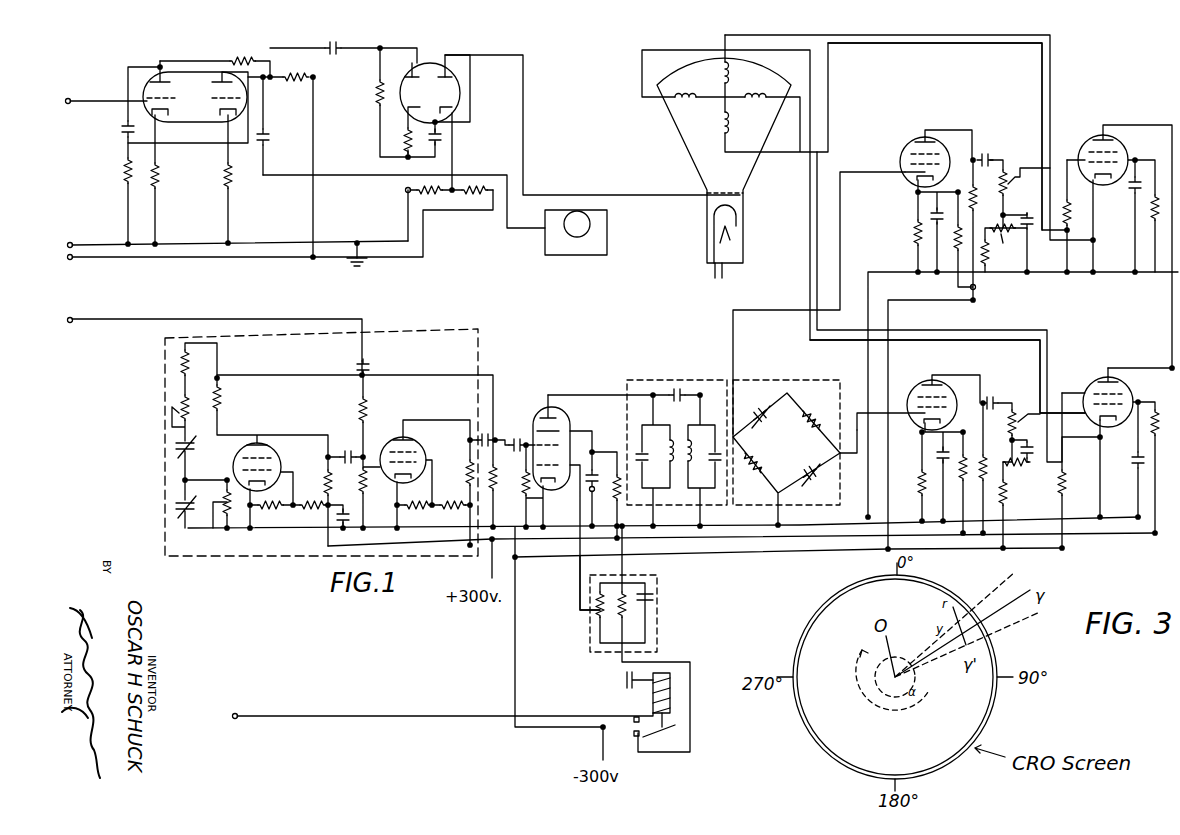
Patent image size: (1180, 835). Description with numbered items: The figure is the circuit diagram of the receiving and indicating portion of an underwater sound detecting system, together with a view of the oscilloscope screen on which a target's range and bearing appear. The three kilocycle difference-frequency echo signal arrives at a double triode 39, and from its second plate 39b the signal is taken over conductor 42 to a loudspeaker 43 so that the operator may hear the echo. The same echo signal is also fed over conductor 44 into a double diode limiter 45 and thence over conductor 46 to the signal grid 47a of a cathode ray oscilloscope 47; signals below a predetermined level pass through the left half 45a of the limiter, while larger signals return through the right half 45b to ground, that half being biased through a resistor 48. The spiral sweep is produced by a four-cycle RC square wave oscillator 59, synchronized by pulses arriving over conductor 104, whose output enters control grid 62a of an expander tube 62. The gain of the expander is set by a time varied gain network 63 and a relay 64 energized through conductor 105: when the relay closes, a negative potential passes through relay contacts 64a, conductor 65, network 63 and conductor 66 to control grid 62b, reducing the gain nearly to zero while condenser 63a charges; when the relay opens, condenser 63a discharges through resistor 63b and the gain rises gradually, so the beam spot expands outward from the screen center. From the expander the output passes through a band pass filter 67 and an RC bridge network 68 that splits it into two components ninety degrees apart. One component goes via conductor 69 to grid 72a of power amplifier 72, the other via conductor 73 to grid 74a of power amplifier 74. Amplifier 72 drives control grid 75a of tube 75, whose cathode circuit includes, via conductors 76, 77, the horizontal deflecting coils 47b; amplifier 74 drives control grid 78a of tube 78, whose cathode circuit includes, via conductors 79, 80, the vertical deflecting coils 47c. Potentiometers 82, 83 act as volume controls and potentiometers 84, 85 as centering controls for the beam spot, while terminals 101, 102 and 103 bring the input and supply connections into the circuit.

The double triode 39 is at (145, 85).
The second plate 39b is at (226, 68).
The conductor 42 is at (383, 176).
The loudspeaker 43 is at (577, 255).
The conductor 44 is at (367, 54).
The double diode limiter 45 is at (462, 81).
The left half of limiter 45a is at (425, 79).
The right half of limiter 45b is at (442, 80).
The conductor 46 is at (584, 195).
The cathode ray oscilloscope 47 is at (746, 226).
The signal grid 47a is at (716, 196).
The horizontal set of beam deflecting coils 47b is at (676, 98).
The vertical set of beam deflecting coils 47c is at (718, 126).
The resistor 48 is at (441, 192).
The square wave generator or oscillator 59 is at (164, 400).
The expander tube 62 is at (571, 423).
The control grid 62a is at (546, 444).
The control grid 62b is at (556, 468).
The time varied gain network 63 is at (624, 639).
The condenser 63a is at (655, 598).
The resistor 63b is at (620, 612).
The relay 64 is at (672, 697).
The relay contacts 64a is at (634, 718).
The conductor 65 is at (690, 738).
The conductor 66 is at (581, 570).
The band pass filter 67 is at (647, 379).
The RC bridge network 68 is at (786, 379).
The conductor 69 is at (857, 455).
The power amplifier 72 is at (942, 384).
The grid 72a is at (917, 410).
The conductor 73 is at (841, 240).
The power amplifier 74 is at (945, 140).
The grid 74a is at (916, 163).
The tube 75 is at (1128, 390).
The control grid 75a is at (1094, 388).
The conductor 76 is at (1027, 330).
The conductor 77 is at (1018, 347).
The tube 78 is at (1120, 140).
The control grid 78a is at (1088, 158).
The conductor 79 is at (967, 37).
The conductor 80 is at (1000, 45).
The potentiometer 82 is at (1006, 408).
The potentiometer 83 is at (1006, 170).
The potentiometer 84 is at (1013, 477).
The potentiometer 85 is at (1003, 240).
The input terminal 101 is at (87, 101).
The terminal 102 is at (218, 244).
The terminal 103 is at (260, 230).
The conductor 104 is at (195, 336).
The conductor 105 is at (424, 716).